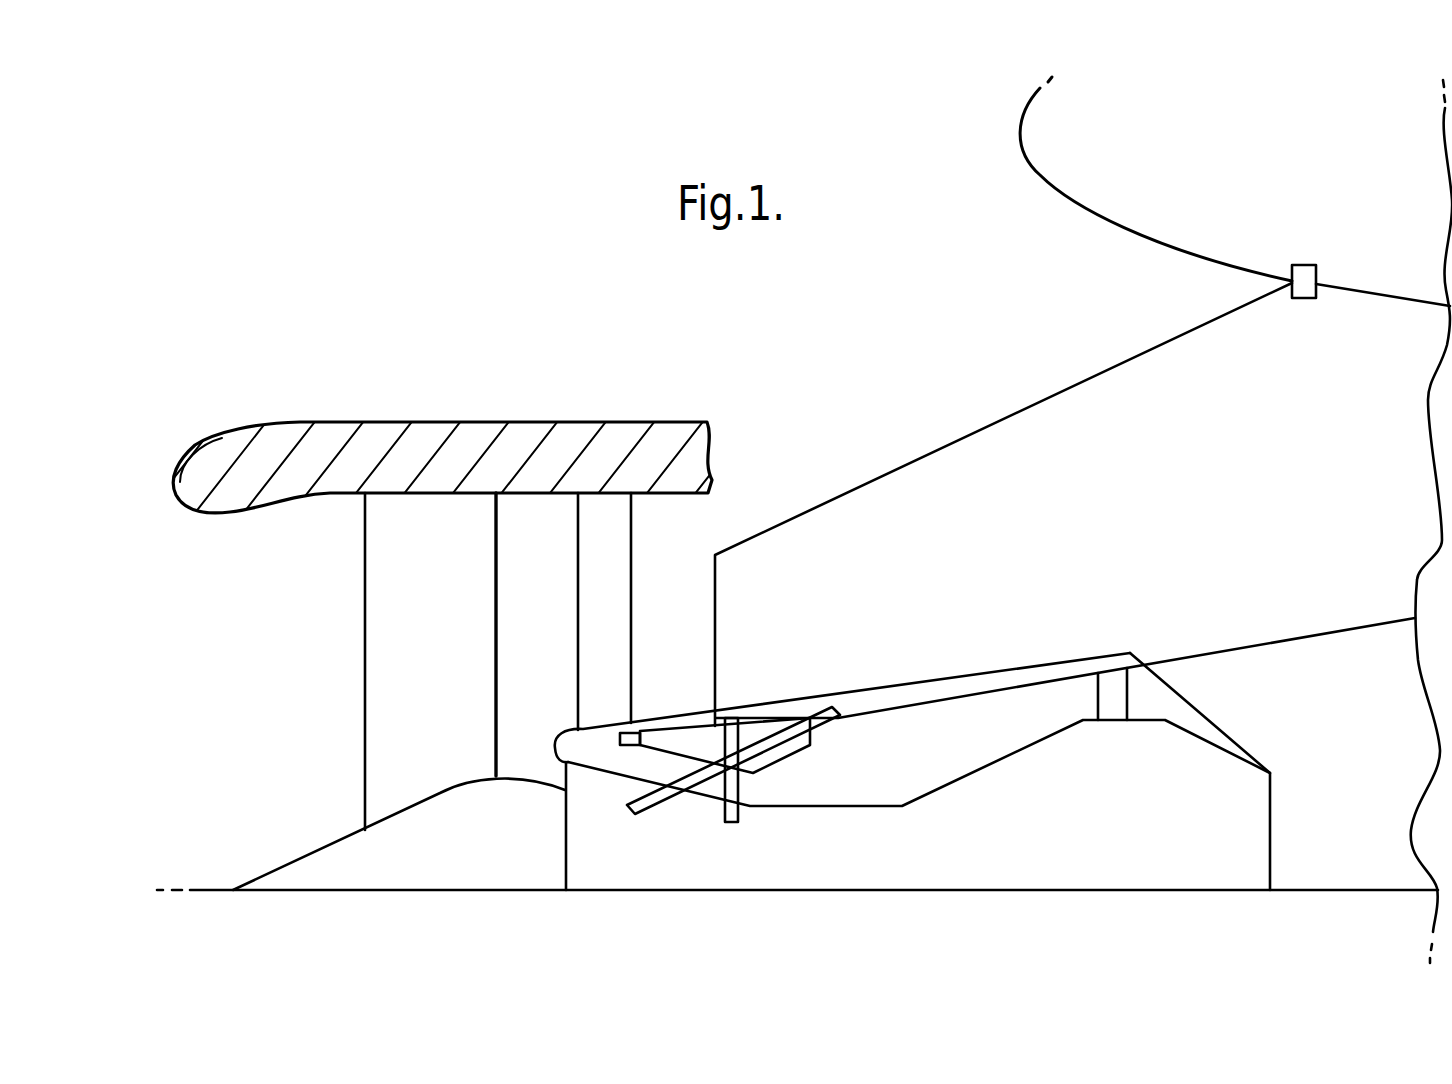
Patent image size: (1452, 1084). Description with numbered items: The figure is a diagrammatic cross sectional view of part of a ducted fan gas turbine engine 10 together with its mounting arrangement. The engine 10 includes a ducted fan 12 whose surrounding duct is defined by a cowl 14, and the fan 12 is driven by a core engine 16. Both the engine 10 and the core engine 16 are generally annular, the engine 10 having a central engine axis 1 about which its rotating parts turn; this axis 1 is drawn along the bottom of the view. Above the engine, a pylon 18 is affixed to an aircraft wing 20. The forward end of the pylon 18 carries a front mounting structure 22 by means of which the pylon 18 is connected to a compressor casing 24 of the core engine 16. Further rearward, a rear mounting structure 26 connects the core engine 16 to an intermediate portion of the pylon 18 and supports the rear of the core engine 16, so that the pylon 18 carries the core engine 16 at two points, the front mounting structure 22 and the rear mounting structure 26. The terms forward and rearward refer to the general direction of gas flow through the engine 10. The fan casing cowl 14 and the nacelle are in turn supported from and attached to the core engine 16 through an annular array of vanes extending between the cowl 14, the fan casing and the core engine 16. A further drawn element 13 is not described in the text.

The central engine axis 1 is at (1315, 890).
The ducted fan gas turbine engine 10 is at (448, 905).
The ducted fan 12 is at (400, 688).
The support pillar 13 is at (605, 508).
The cowl 14 is at (431, 484).
The core engine 16 is at (832, 840).
The pylon 18 is at (993, 435).
The aircraft wing 20 is at (1165, 221).
The front mounting structure 22 is at (625, 752).
The compressor casing 24 is at (675, 817).
The rear mounting structure 26 is at (1125, 696).